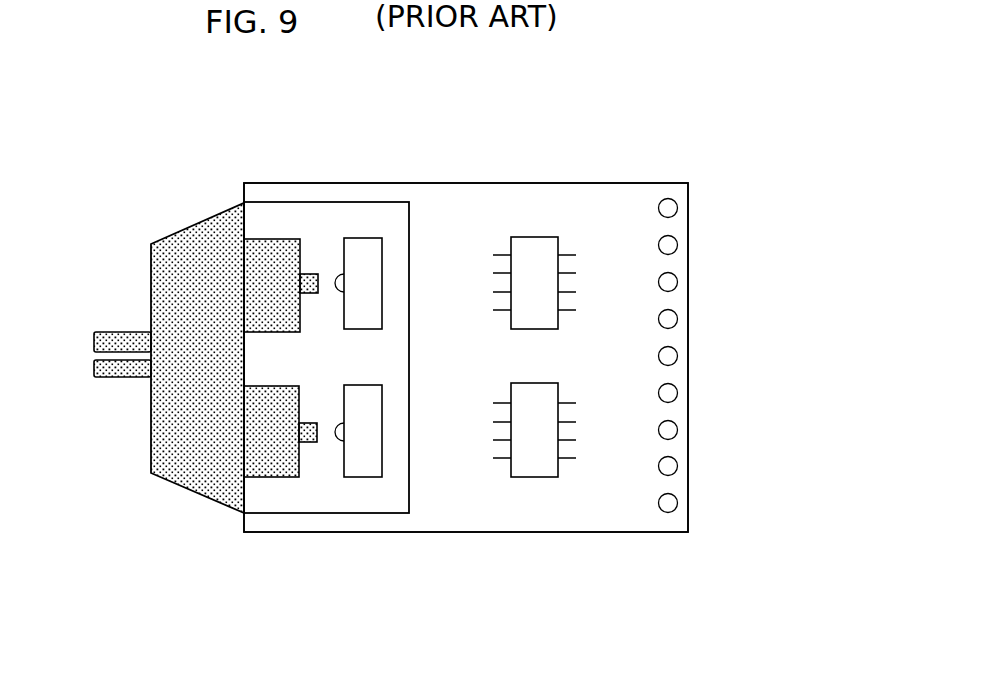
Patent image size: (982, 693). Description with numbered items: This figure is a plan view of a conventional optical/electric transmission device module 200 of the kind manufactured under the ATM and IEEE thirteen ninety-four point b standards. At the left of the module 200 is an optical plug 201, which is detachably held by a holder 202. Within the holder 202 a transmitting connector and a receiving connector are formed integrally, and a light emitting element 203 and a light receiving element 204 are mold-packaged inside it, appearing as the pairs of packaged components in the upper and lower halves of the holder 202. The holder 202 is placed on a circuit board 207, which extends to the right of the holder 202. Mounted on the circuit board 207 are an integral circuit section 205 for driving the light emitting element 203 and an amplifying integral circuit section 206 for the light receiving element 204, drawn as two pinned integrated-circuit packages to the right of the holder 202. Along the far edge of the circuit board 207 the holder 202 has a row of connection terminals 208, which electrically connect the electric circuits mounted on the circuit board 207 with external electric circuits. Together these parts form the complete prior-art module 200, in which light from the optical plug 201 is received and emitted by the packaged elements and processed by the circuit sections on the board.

The module 200 is at (767, 180).
The optical plug 201 is at (190, 248).
The holder 202 is at (302, 204).
The light emitting element 203 is at (353, 468).
The light receiving element 204 is at (373, 248).
The integral circuit section 205 is at (540, 450).
The amplifying integral circuit section 206 is at (540, 256).
The circuit board 207 is at (613, 505).
The connection terminals 208 is at (672, 201).